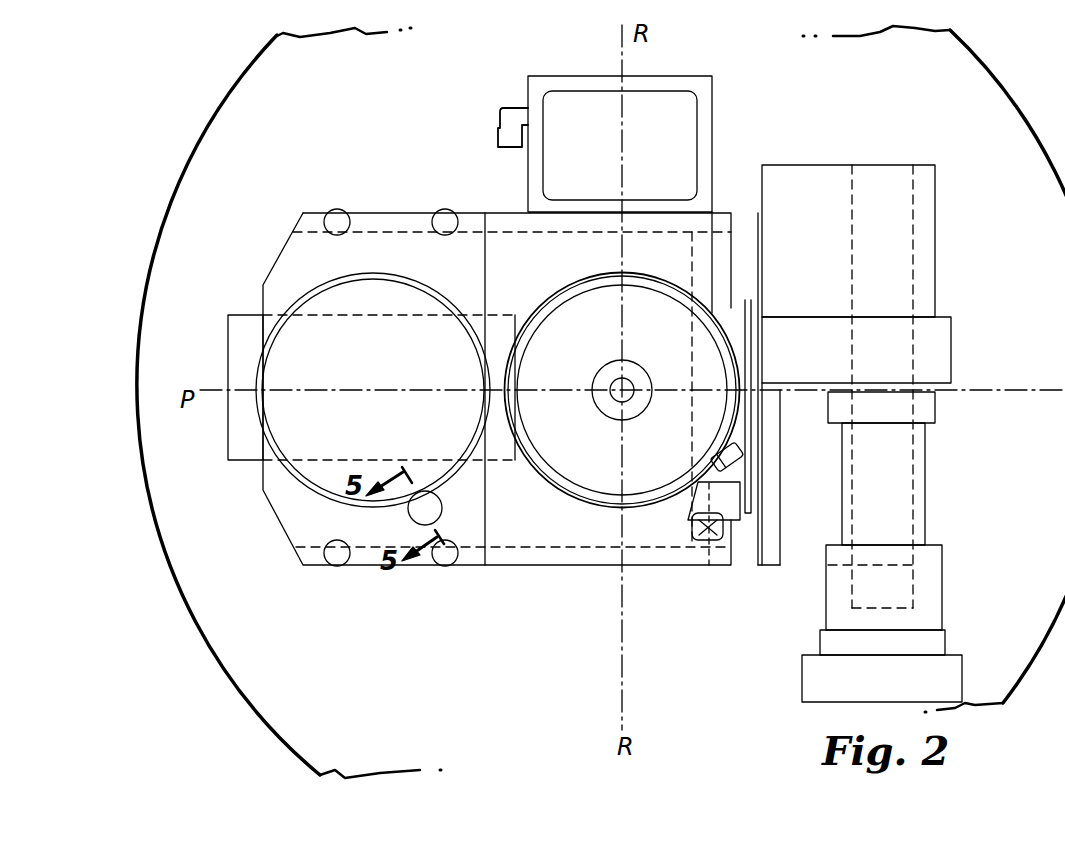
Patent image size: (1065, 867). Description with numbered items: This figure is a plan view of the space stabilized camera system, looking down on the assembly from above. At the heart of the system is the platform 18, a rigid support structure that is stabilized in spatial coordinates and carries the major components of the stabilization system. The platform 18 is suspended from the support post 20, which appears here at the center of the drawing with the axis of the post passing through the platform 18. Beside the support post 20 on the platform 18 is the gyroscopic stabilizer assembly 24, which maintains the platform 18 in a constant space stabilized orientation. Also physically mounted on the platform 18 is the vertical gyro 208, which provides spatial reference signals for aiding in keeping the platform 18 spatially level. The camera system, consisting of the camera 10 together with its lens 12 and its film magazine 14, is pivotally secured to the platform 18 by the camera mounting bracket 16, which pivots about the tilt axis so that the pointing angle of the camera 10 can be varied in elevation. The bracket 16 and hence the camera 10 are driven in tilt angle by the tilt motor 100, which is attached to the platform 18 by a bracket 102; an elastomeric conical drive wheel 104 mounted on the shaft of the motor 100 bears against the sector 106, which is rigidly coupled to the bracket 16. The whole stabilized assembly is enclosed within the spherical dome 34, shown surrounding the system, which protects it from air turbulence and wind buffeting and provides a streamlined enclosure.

The camera 10 is at (951, 333).
The lens 12 is at (944, 576).
The film magazine 14 is at (916, 462).
The camera mounting bracket 16 is at (788, 568).
The platform 18 is at (505, 567).
The support post 20 is at (624, 360).
The gyroscopic stabilizer assembly 24 is at (310, 290).
The spherical enclosure or dome 34 is at (1063, 188).
The tilt motor 100 is at (692, 545).
The bracket 102 is at (742, 516).
The elastomeric conical drive wheel 104 is at (743, 452).
The sector 106 is at (755, 297).
The vertical gyro 208 is at (697, 98).